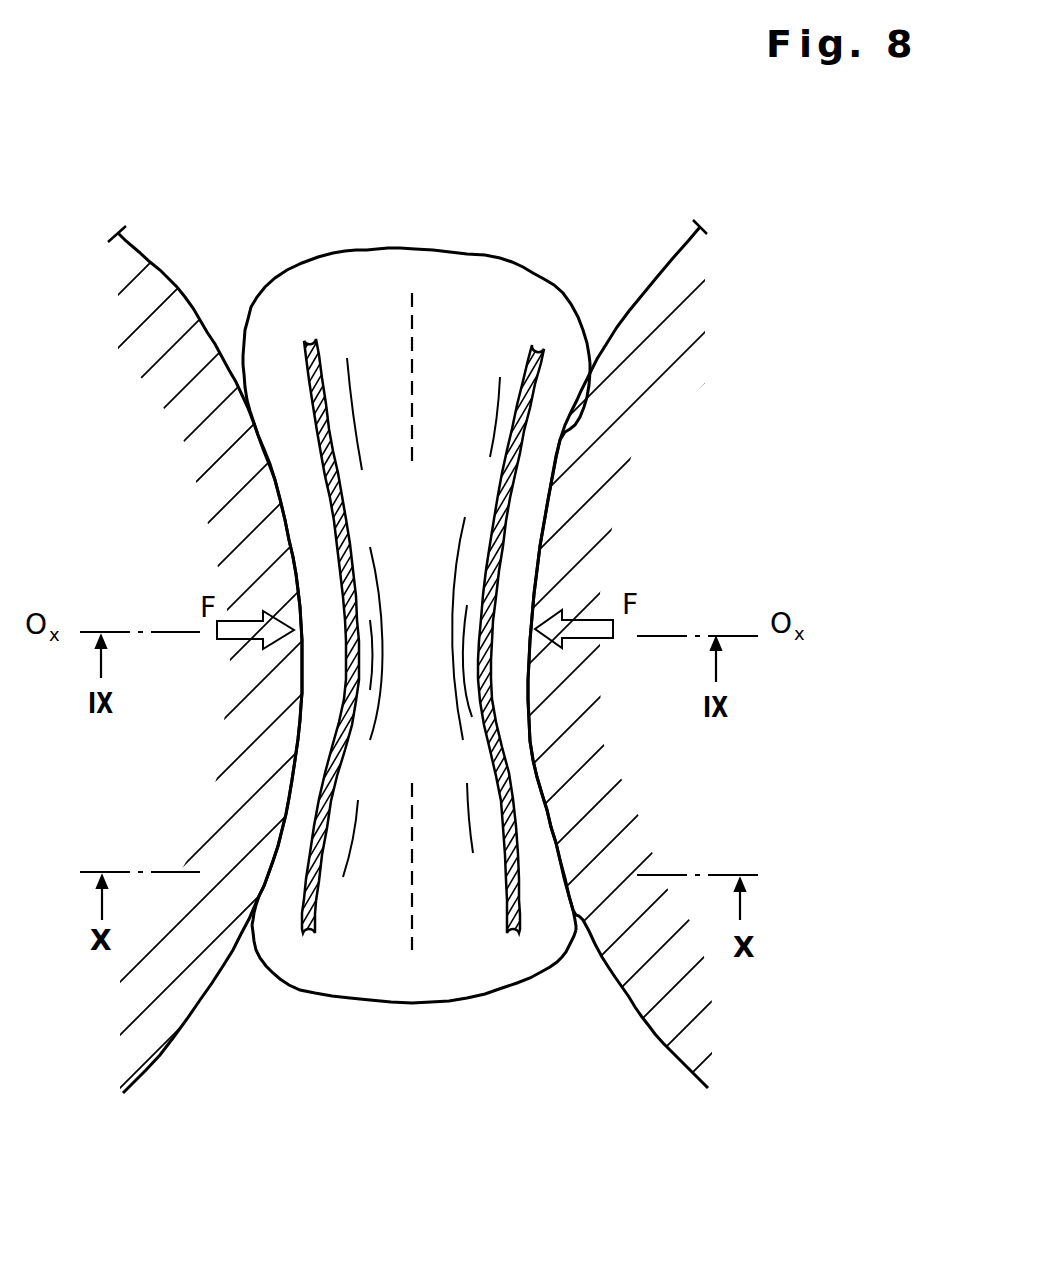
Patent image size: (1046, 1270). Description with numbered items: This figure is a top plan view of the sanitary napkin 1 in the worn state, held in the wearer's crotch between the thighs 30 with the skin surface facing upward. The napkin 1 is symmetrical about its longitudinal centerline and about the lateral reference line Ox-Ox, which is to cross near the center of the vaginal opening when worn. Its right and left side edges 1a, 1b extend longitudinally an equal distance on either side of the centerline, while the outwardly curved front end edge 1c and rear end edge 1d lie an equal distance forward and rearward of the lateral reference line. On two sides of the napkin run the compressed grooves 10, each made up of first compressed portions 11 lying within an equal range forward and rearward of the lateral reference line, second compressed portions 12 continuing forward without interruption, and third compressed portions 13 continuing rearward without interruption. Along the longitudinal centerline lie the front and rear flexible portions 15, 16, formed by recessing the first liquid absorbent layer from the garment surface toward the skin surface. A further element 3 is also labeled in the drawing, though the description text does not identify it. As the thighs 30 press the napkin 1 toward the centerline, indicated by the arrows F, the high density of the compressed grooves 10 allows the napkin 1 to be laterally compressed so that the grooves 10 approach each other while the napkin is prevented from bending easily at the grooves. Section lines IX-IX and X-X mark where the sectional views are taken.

The sanitary napkin 1 is at (517, 250).
The right side edge 1a is at (533, 693).
The left side edge 1b is at (300, 677).
The front end edge 1c is at (408, 248).
The rear end edge 1d is at (402, 1003).
The elastic material portion 3 is at (462, 420).
The compressed grooves 10 is at (302, 464).
The first compressed portions 11 is at (342, 582).
The second compressed portions 12 is at (305, 367).
The third compressed portions 13 is at (310, 912).
The front flexible portion 15 is at (412, 343).
The rear flexible portion 16 is at (415, 910).
The thighs 30 is at (120, 238).